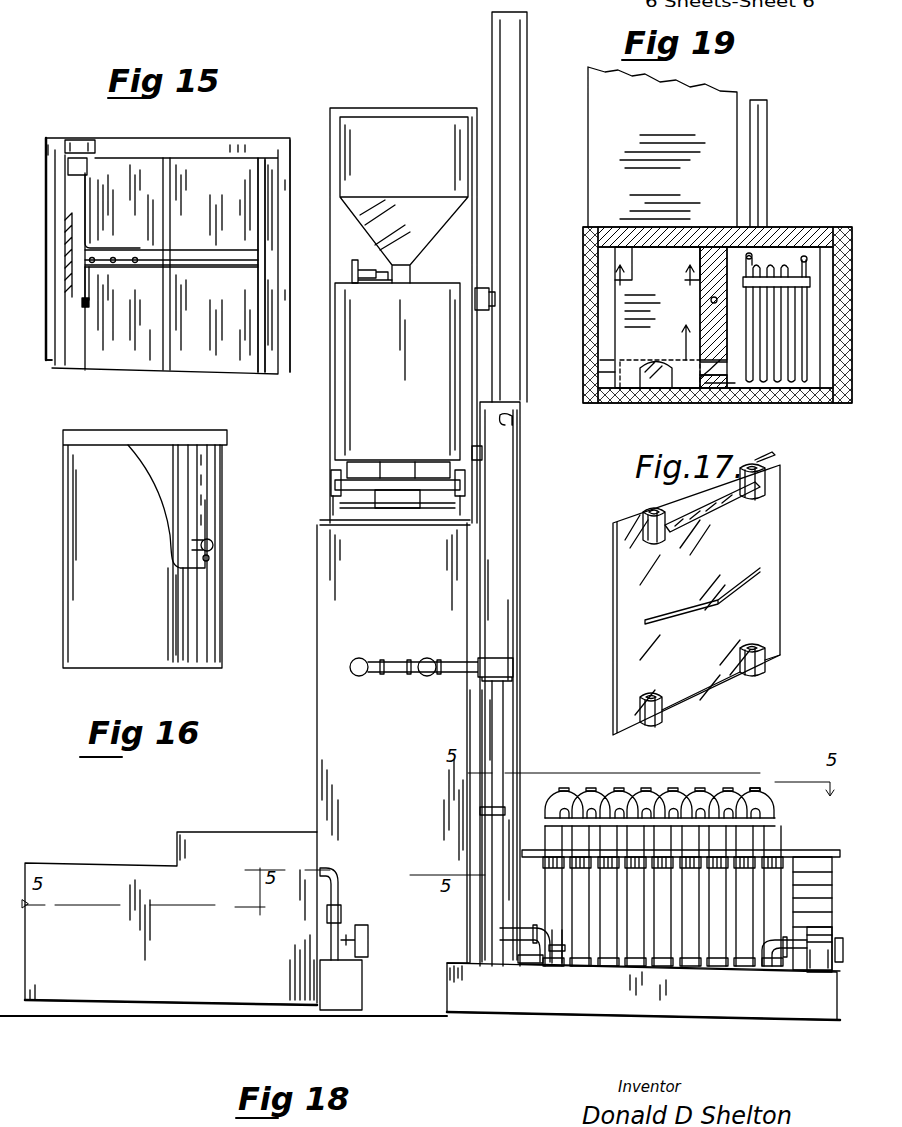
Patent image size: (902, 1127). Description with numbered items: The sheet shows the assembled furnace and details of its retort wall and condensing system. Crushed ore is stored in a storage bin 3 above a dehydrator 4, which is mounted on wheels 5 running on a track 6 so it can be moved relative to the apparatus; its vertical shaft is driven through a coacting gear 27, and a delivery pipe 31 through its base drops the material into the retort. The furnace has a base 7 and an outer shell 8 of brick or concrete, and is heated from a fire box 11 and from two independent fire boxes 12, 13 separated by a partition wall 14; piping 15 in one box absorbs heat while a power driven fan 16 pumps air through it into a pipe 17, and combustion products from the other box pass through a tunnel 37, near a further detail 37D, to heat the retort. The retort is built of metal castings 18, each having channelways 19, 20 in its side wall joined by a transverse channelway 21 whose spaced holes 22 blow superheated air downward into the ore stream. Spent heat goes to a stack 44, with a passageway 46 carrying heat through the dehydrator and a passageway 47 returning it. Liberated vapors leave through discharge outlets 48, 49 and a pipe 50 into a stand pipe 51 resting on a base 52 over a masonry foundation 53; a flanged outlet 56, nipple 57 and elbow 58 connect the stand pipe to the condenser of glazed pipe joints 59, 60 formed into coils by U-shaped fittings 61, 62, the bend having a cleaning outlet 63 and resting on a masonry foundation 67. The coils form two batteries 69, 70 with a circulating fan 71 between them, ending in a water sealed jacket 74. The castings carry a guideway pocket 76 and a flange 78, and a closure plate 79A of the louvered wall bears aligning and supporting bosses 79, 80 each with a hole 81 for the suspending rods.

In FIG. 18, the storage bin 3 is at (395, 133).
In FIG. 18, the dehydrator 4 is at (450, 345).
In FIG. 18, the wheels 5 is at (462, 487).
In FIG. 18, the track 6 is at (462, 503).
In FIG. 19, the base 7 is at (650, 392).
In FIG. 19, the outer shell 8 is at (740, 128).
In FIG. 18, the outer shell 8 is at (450, 585).
In FIG. 19, the fire box 11 is at (625, 312).
In FIG. 19, the fire box 12 is at (775, 250).
In FIG. 18, the fire box 12 is at (112, 882).
In FIG. 19, the fire box 13 is at (612, 355).
In FIG. 19, the partition wall 14 is at (698, 315).
In FIG. 19, the piping 15 is at (775, 330).
In FIG. 18, the power driven fan 16 is at (347, 945).
In FIG. 15, the pipe 17 is at (284, 218).
In FIG. 19, the pipe 17 is at (718, 300).
In FIG. 15, the metal castings 18 is at (190, 168).
In FIG. 16, the metal castings 18 is at (150, 446).
In FIG. 15, the channelway 19 is at (78, 145).
In FIG. 16, the channelway 19 is at (210, 510).
In FIG. 15, the channelway 20 is at (256, 160).
In FIG. 15, the transverse channelway 21 is at (205, 265).
In FIG. 16, the transverse channelway 21 is at (214, 546).
In FIG. 15, the spaced holes 22 is at (135, 266).
In FIG. 16, the spaced holes 22 is at (210, 562).
In FIG. 18, the coacting gear 27 is at (414, 279).
In FIG. 18, the delivery pipe 31 is at (390, 470).
In FIG. 19, the tunnel 37 is at (684, 265).
In FIG. 19, the damper opening 37D is at (712, 388).
In FIG. 18, the stack 44 is at (508, 230).
In FIG. 18, the passageway 46 is at (484, 453).
In FIG. 18, the passageway 47 is at (490, 298).
In FIG. 18, the discharge outlet 48 is at (360, 677).
In FIG. 18, the discharge outlet 49 is at (428, 677).
In FIG. 18, the pipe 50 is at (388, 672).
In FIG. 19, the stand pipe 51 is at (760, 205).
In FIG. 18, the stand pipe 51 is at (500, 720).
In FIG. 18, the base 52 is at (472, 960).
In FIG. 18, the masonry foundation 53 is at (460, 975).
In FIG. 18, the flanged outlet 56 is at (538, 930).
In FIG. 18, the nipple 57 is at (526, 964).
In FIG. 18, the elbow 58 is at (560, 964).
In FIG. 18, the glazed pipe joint 59 is at (780, 850).
In FIG. 18, the glazed pipe joint 60 is at (790, 905).
In FIG. 18, the U-shaped fitting 61 is at (766, 806).
In FIG. 18, the U-shaped fitting 62 is at (715, 970).
In FIG. 18, the outlet 63 is at (732, 792).
In FIG. 18, the masonry foundation 67 is at (760, 1000).
In FIG. 18, the battery of coils 69 is at (668, 958).
In FIG. 16, the battery of coils 70 is at (183, 625).
In FIG. 18, the circulating fan 71 is at (820, 960).
In FIG. 17, the water sealed jacket 74 is at (758, 484).
In FIG. 16, the guideway pocket 76 is at (186, 467).
In FIG. 15, the flange 78 is at (48, 366).
In FIG. 17, the aligning and supporting boss 79 is at (650, 542).
In FIG. 17, the plate 79A is at (775, 525).
In FIG. 17, the aligning and supporting boss 80 is at (665, 712).
In FIG. 17, the hole 81 is at (652, 692).